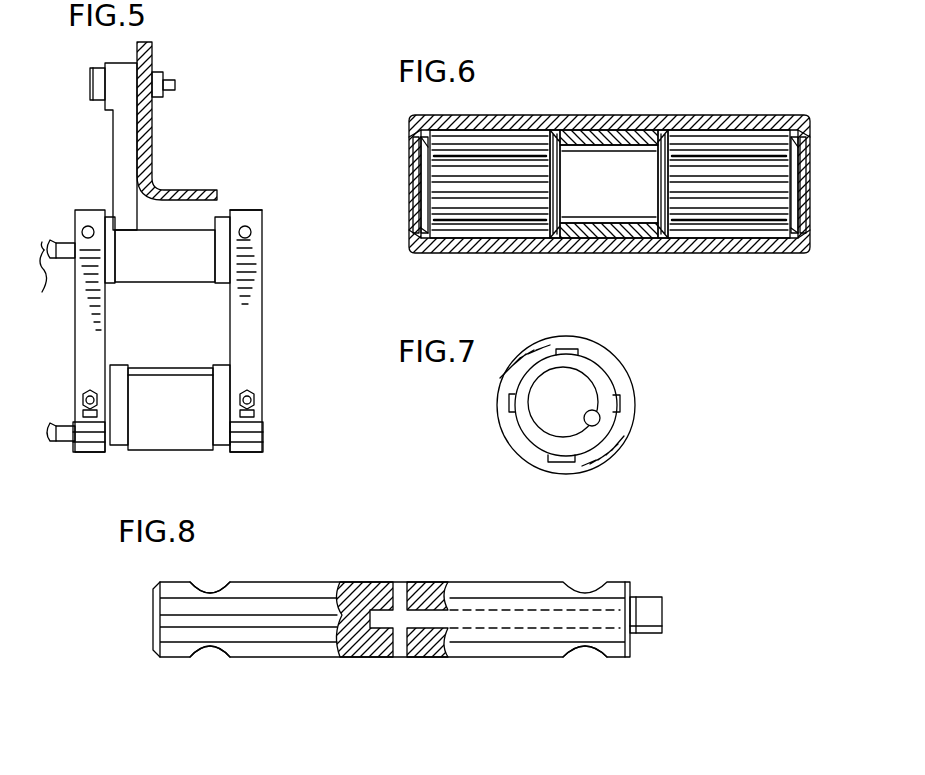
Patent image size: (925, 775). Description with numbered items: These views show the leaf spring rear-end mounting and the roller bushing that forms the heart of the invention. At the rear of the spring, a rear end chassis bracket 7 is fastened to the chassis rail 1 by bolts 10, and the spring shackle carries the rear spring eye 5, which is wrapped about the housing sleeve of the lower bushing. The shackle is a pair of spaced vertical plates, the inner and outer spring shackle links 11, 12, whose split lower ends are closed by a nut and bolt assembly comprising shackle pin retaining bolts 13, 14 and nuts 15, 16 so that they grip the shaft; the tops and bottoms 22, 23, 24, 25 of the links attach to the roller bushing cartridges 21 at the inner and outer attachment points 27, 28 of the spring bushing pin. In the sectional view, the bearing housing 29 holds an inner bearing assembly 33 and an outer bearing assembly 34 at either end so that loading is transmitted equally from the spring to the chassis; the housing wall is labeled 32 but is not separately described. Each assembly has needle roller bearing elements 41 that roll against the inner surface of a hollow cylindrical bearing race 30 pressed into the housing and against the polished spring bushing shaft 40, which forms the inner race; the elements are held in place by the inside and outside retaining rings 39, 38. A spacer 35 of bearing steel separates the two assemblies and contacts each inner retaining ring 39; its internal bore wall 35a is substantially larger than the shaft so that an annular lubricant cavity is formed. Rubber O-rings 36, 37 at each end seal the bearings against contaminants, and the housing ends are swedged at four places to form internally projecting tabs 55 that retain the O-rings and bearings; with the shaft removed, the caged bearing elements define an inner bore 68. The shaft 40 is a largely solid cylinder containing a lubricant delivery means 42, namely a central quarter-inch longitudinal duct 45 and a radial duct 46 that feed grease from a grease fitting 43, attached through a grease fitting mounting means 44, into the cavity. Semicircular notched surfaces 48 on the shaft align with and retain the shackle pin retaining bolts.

In FIG. 5, the chassis rail 1 is at (152, 50).
In FIG. 5, the rear spring eye 5 is at (158, 430).
In FIG. 5, the rear end chassis bracket 7 is at (113, 125).
In FIG. 5, the bolts 10 is at (92, 78).
In FIG. 5, the inner spring shackle link 11 is at (262, 282).
In FIG. 5, the outer spring shackle link 12 is at (75, 335).
In FIG. 5, the shackle pin retaining bolt 13 is at (84, 396).
In FIG. 5, the shackle pin retaining bolt 14 is at (256, 394).
In FIG. 5, the nut 15 is at (83, 402).
In FIG. 5, the nut 16 is at (262, 405).
In FIG. 5, the roller bushing cartridge 21 is at (242, 200).
In FIG. 5, the top of shackle link 22 is at (262, 228).
In FIG. 5, the bottom of shackle link 23 is at (263, 445).
In FIG. 5, the top of shackle link 24 is at (76, 215).
In FIG. 5, the bottom of shackle link 25 is at (96, 453).
In FIG. 8, the spring bushing pin inner attachment point 27 is at (190, 662).
In FIG. 8, the spring bushing pin outer attachment point 28 is at (612, 662).
In FIG. 6, the bearing housing 29 is at (632, 133).
In FIG. 7, the bearing housing 29 is at (566, 352).
In FIG. 6, the bearing race 30 is at (490, 140).
In FIG. 6, the housing 32 is at (586, 128).
In FIG. 6, the inner bearing assembly 33 is at (410, 162).
In FIG. 6, the outer bearing assembly 34 is at (812, 176).
In FIG. 6, the spacer 35 is at (608, 246).
In FIG. 6, the internal bore wall 35a is at (615, 197).
In FIG. 6, the rubber O-ring 36 is at (410, 230).
In FIG. 6, the rubber O-ring 37 is at (814, 231).
In FIG. 6, the outer bearing element retaining ring 38 is at (413, 122).
In FIG. 6, the inner bearing element retaining ring 39 is at (554, 134).
In FIG. 8, the spring bushing shaft 40 is at (460, 582).
In FIG. 6, the needle roller bearing element 41 is at (458, 152).
In FIG. 8, the lubricant delivery means 42 is at (418, 660).
In FIG. 5, the grease fitting 43 is at (43, 285).
In FIG. 5, the grease fitting mounting means 44 is at (60, 246).
In FIG. 8, the grease fitting mounting means 44 is at (662, 600).
In FIG. 8, the longitudinal duct 45 is at (528, 610).
In FIG. 8, the radial duct 46 is at (397, 660).
In FIG. 8, the semicircular notched surface 48 is at (212, 594).
In FIG. 7, the internally projecting tab 55 is at (580, 357).
In FIG. 7, the inner bore 68 is at (605, 430).